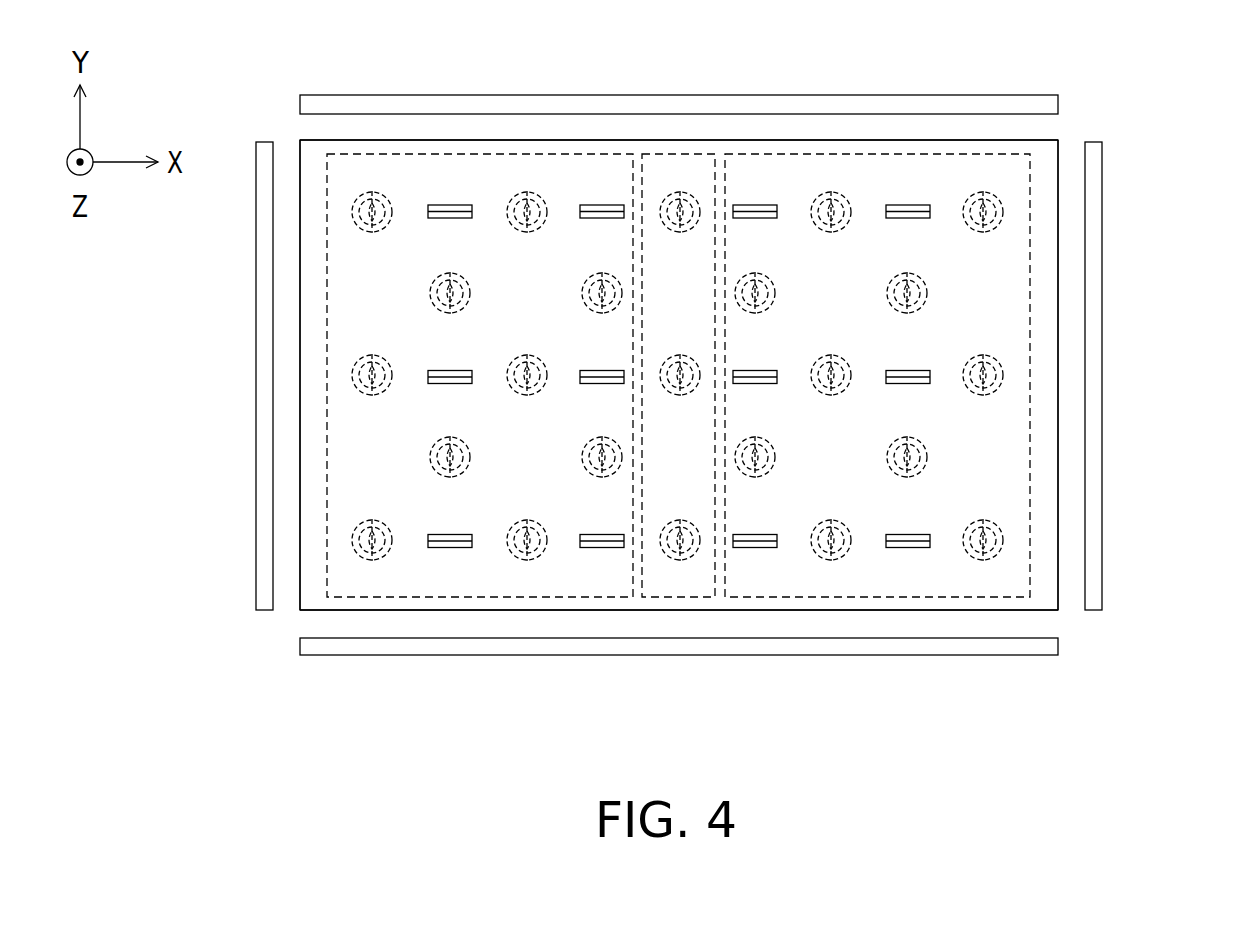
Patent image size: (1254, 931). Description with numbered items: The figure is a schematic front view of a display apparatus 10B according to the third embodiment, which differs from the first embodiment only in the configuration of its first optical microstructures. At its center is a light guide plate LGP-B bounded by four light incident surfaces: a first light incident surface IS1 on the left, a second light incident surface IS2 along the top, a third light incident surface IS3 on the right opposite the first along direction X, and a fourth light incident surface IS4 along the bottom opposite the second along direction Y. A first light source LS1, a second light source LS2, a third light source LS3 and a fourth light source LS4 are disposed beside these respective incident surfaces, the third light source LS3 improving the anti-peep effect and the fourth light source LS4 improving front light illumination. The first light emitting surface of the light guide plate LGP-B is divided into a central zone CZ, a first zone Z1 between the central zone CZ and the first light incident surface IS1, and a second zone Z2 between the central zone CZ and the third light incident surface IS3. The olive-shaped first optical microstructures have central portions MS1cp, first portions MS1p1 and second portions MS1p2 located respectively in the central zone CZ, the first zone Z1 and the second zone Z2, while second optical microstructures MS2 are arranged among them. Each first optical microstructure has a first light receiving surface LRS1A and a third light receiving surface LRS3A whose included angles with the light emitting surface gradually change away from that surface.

The display apparatus 10B is at (1238, 746).
The light guide plate LGP-B is at (1040, 600).
The first light source LS1 is at (265, 282).
The second light source LS2 is at (602, 108).
The third light source LS3 is at (1093, 282).
The fourth light source LS4 is at (604, 645).
The first light incident surface IS1 is at (296, 482).
The second light incident surface IS2 is at (802, 138).
The third light incident surface IS3 is at (1062, 482).
The fourth light incident surface IS4 is at (802, 610).
The first zone Z1 is at (368, 152).
The second zone Z2 is at (1030, 250).
The central zone CZ is at (680, 152).
The first light receiving surface LRS1A is at (678, 135).
The third light receiving surface LRS3A is at (345, 217).
The second optical microstructure MS2 is at (908, 205).
The first portion MS1p1 is at (512, 556).
The central portion MS1cp is at (668, 555).
The second portion MS1p2 is at (970, 553).